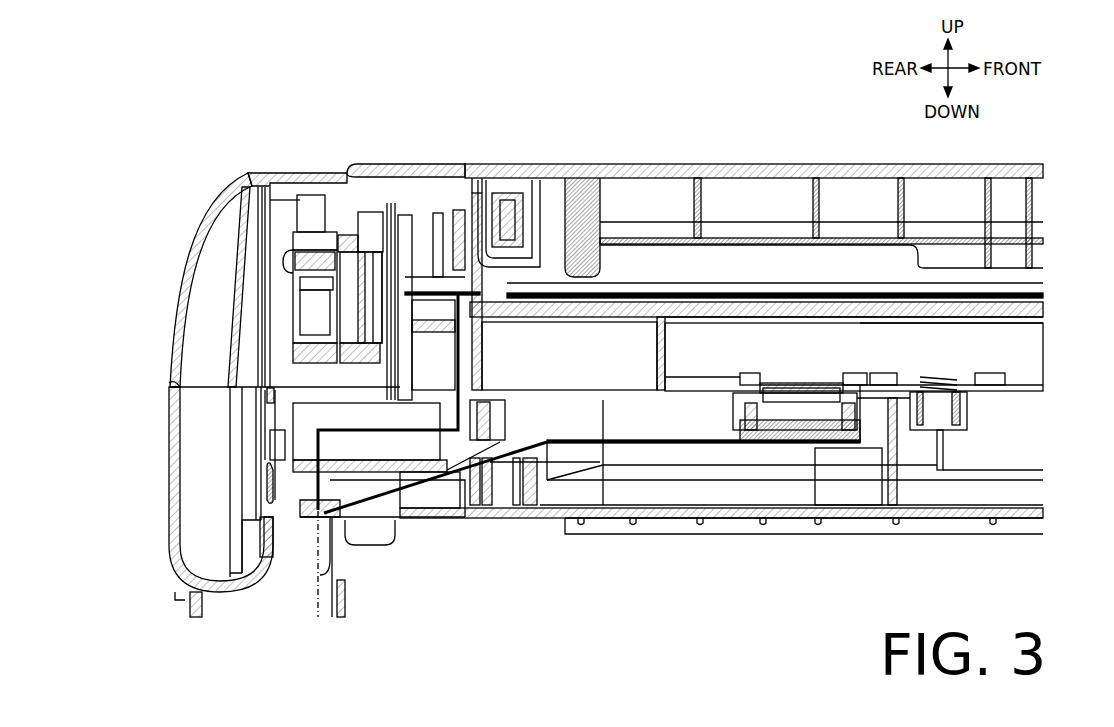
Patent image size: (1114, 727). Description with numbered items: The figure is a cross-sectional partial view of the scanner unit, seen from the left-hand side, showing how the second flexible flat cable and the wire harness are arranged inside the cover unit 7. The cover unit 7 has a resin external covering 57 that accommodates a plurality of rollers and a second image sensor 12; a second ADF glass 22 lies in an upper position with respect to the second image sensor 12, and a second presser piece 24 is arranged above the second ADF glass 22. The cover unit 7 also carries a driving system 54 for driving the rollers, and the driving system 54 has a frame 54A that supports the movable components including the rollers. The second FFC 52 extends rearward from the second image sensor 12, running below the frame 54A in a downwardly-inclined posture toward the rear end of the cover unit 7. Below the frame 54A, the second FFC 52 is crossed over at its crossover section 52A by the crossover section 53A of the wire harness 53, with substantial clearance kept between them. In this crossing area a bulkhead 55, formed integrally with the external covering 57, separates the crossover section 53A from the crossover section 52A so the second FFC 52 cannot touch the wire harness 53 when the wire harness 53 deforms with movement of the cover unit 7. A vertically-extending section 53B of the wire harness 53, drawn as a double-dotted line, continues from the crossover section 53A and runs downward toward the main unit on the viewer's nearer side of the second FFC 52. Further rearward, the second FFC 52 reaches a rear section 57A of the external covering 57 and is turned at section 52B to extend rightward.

The cover unit 7 is at (684, 141).
The second image sensor 12 is at (1038, 356).
The second ADF glass 22 is at (1043, 298).
The second presser piece 24 is at (1043, 282).
The second FFC 52 is at (404, 478).
The crossover section 52A is at (314, 510).
The section 52B is at (258, 470).
The wire harness 53 is at (455, 383).
The crossover section 53A is at (322, 430).
The vertically-extending section 53B is at (314, 577).
The driving system 54 is at (335, 194).
The frame 54A is at (402, 210).
The bulkhead 55 is at (340, 453).
The external covering 57 is at (170, 432).
The rear section 57A is at (258, 490).